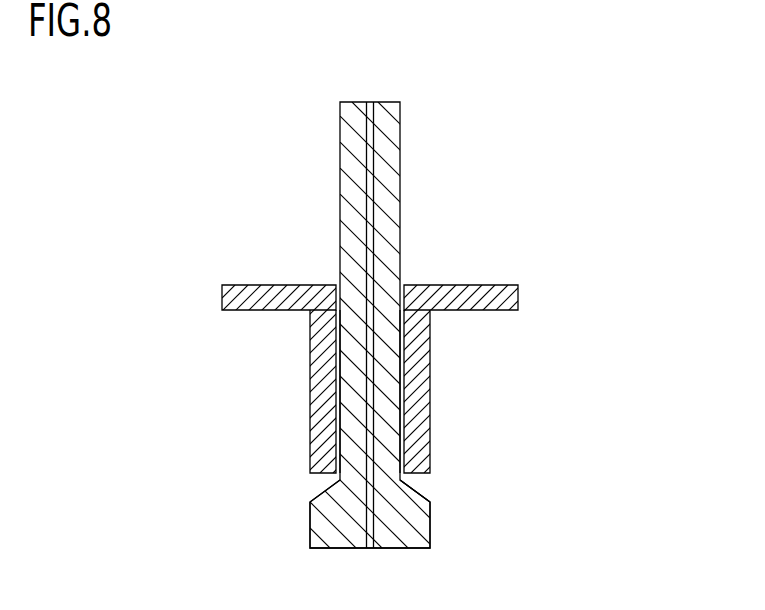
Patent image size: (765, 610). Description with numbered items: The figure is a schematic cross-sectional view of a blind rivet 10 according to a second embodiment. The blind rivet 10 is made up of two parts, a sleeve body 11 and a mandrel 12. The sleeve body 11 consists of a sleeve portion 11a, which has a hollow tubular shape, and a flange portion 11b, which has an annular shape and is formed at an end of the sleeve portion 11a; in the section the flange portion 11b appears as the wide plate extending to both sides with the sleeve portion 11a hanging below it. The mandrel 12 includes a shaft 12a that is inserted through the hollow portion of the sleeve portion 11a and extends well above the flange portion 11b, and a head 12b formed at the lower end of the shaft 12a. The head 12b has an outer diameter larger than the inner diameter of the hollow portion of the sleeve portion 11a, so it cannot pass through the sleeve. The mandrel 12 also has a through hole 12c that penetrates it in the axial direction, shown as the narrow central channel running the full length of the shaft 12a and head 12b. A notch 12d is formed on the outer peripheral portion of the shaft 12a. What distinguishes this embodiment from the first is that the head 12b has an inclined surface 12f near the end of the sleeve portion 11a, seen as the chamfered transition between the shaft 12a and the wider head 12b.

The blind rivet 10 is at (534, 85).
The sleeve body 11 is at (400, 379).
The sleeve portion 11a is at (432, 412).
The flange portion 11b is at (478, 312).
The mandrel 12 is at (345, 291).
The shaft 12a is at (310, 405).
The head 12b is at (310, 517).
The through hole 12c is at (370, 103).
The notch 12d is at (400, 358).
The inclined surface 12f is at (423, 492).